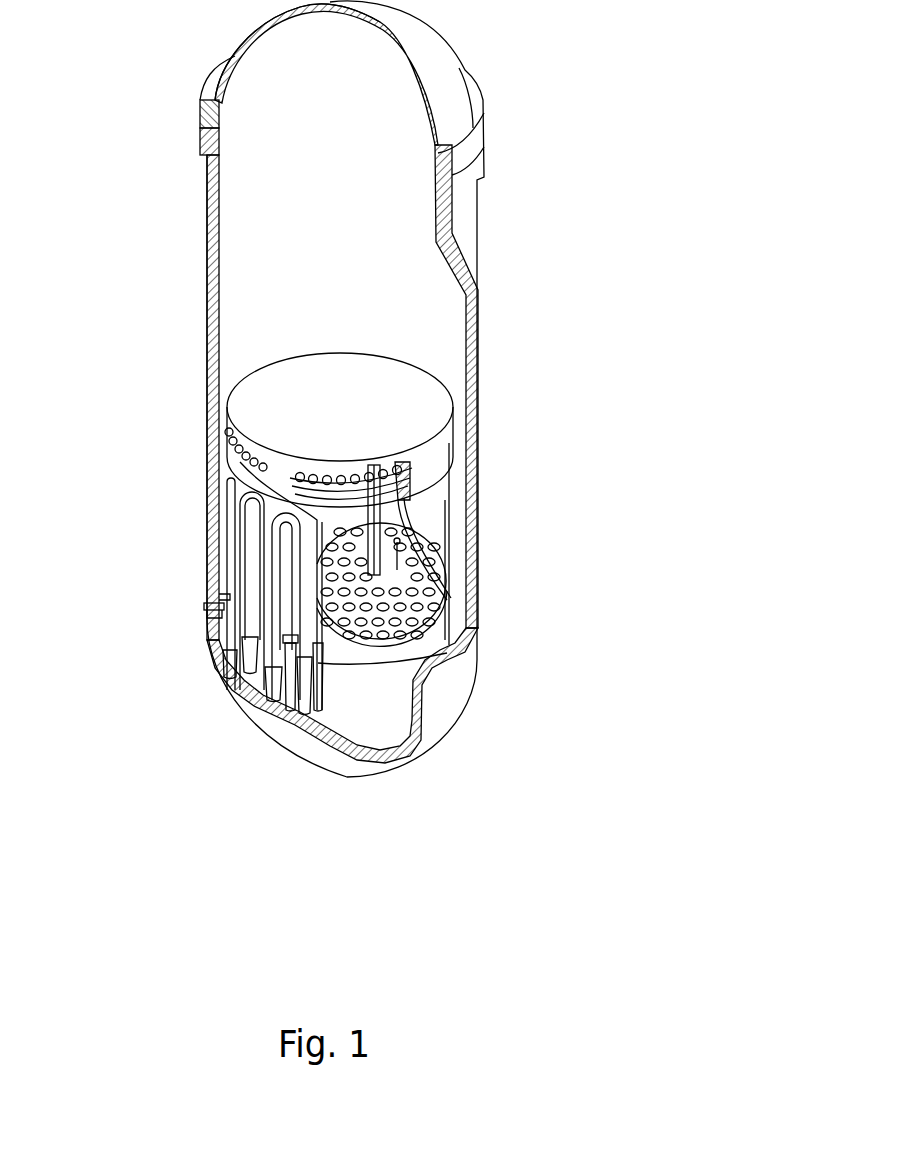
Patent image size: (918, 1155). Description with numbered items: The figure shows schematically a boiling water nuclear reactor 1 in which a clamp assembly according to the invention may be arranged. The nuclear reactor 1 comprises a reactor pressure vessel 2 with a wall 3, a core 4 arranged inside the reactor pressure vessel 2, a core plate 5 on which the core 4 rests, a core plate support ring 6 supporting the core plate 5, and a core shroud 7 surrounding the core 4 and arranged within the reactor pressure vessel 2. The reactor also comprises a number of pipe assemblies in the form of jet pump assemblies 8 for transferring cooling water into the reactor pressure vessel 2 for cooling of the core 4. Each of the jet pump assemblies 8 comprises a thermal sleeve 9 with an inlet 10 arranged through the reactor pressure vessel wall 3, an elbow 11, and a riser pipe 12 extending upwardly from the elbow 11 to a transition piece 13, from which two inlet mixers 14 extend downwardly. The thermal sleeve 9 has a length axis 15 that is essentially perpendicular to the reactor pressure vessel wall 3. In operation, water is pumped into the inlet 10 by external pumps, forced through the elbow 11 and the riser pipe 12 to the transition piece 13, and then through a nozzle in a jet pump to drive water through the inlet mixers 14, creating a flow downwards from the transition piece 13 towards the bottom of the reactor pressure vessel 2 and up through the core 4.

The boiling water nuclear reactor 1 is at (356, 450).
The reactor pressure vessel 2 is at (393, 389).
The wall 3 is at (478, 322).
The core 4 is at (312, 523).
The core plate 5 is at (448, 597).
The core plate support ring 6 is at (449, 607).
The core shroud 7 is at (403, 586).
The jet pump assemblies 8 is at (232, 562).
The thermal sleeve 9 is at (208, 616).
The inlet 10 is at (204, 606).
The elbow 11 is at (280, 662).
The riser pipe 12 is at (228, 597).
The transition piece 13 is at (242, 490).
The inlet mixers 14 is at (252, 557).
The length axis 15 is at (289, 643).